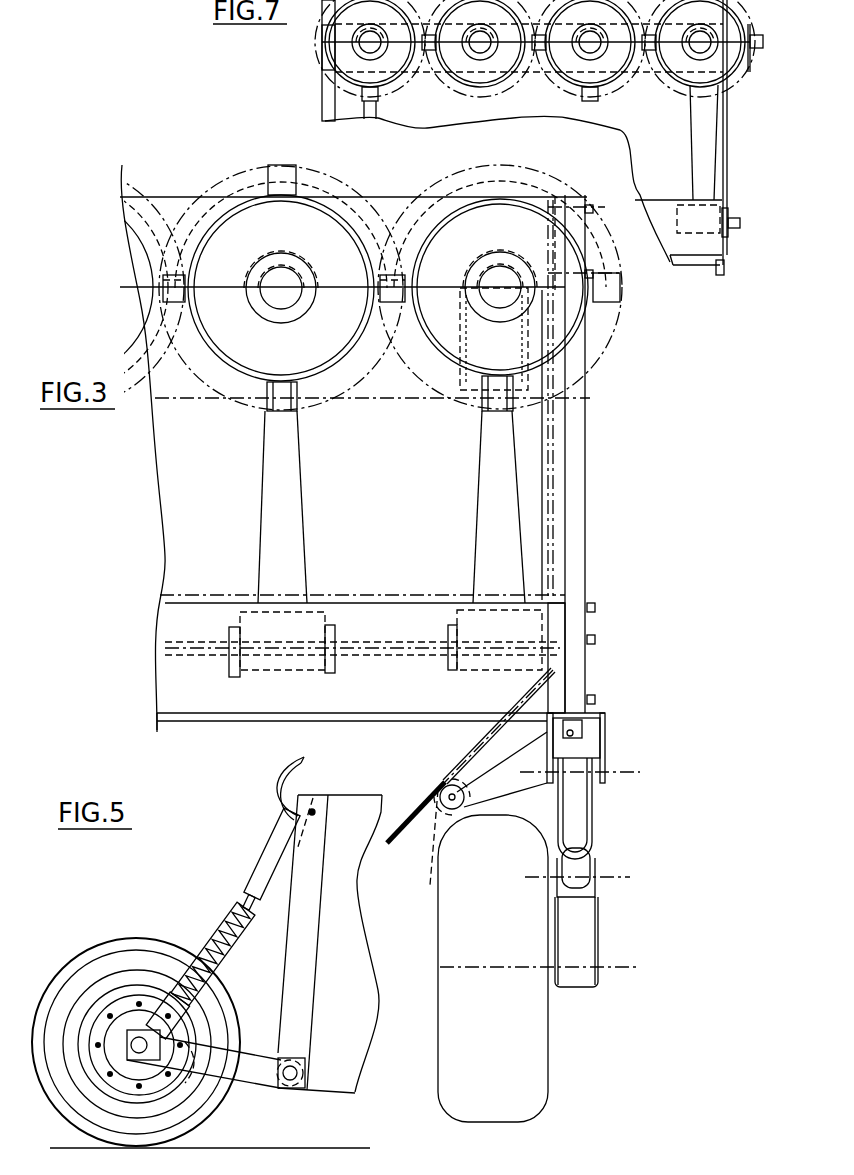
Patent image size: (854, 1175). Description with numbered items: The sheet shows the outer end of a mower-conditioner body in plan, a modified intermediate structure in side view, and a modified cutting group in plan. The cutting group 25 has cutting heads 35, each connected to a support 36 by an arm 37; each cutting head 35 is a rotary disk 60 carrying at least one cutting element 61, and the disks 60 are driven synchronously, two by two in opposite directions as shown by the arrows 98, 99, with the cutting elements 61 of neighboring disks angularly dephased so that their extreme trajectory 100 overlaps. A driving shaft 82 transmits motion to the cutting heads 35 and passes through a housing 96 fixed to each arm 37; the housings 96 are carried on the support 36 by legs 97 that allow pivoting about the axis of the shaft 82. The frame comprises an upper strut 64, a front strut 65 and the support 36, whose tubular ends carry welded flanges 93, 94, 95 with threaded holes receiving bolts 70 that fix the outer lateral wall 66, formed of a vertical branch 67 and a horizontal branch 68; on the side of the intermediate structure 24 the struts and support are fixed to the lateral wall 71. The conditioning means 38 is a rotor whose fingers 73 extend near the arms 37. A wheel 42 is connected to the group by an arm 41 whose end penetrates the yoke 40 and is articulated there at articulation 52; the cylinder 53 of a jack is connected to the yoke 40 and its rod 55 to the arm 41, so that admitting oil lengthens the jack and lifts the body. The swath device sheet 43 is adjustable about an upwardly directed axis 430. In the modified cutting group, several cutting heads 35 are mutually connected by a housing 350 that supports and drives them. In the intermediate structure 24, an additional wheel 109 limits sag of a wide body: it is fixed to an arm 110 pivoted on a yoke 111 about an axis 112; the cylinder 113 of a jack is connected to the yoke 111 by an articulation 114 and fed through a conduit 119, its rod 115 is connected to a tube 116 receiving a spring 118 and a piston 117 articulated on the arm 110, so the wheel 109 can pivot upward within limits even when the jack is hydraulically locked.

In FIG. 5, the intermediate structure 24 is at (357, 1014).
In FIG. 3, the cutting group 25 is at (222, 182).
In FIG. 7, the cutting head 35 is at (384, 100).
In FIG. 3, the cutting head 35 is at (326, 196).
In FIG. 7, the support 36 is at (708, 266).
In FIG. 3, the support 36 is at (232, 722).
In FIG. 7, the arm 37 is at (372, 110).
In FIG. 3, the arm 37 is at (270, 510).
In FIG. 3, the conditioning means 38 is at (556, 475).
In FIG. 3, the yoke 40 is at (606, 752).
In FIG. 3, the arm 41 is at (585, 950).
In FIG. 3, the wheel 42 is at (543, 1060).
In FIG. 3, the swath device sheet 43 is at (417, 815).
In FIG. 3, the articulation 52 is at (610, 878).
In FIG. 3, the cylinder 53 is at (580, 805).
In FIG. 3, the rod 55 is at (576, 870).
In FIG. 3, the rotary disk 60 is at (250, 355).
In FIG. 3, the cutting element 61 is at (281, 172).
In FIG. 7, the upper strut 64 is at (685, 250).
In FIG. 3, the upper strut 64 is at (170, 618).
In FIG. 3, the front strut 65 is at (177, 290).
In FIG. 7, the lateral wall 66 is at (322, 88).
In FIG. 3, the lateral wall 66 is at (588, 521).
In FIG. 3, the vertical branch 67 is at (582, 678).
In FIG. 3, the horizontal branch 68 is at (585, 412).
In FIG. 3, the bolts 70 is at (594, 212).
In FIG. 7, the lateral wall 71 is at (727, 160).
In FIG. 3, the fingers 73 is at (466, 345).
In FIG. 7, the driving shaft 82 is at (738, 226).
In FIG. 3, the driving shaft 82 is at (387, 648).
In FIG. 3, the flange 93 is at (561, 200).
In FIG. 3, the flange 94 is at (568, 606).
In FIG. 3, the flange 95 is at (566, 734).
In FIG. 7, the housing 96 is at (692, 218).
In FIG. 3, the housing 96 is at (308, 630).
In FIG. 3, the legs 97 is at (236, 630).
In FIG. 3, the arrow 98 is at (347, 266).
In FIG. 3, the arrow 99 is at (434, 276).
In FIG. 3, the extreme trajectory 100 is at (378, 197).
In FIG. 5, the additional wheel 109 is at (66, 972).
In FIG. 5, the arm 110 is at (260, 1070).
In FIG. 5, the yoke 111 is at (297, 998).
In FIG. 5, the axis 112 is at (296, 1084).
In FIG. 5, the cylinder 113 is at (264, 872).
In FIG. 5, the articulation 114 is at (315, 814).
In FIG. 5, the rod 115 is at (246, 899).
In FIG. 5, the tube 116 is at (222, 936).
In FIG. 5, the piston 117 is at (126, 990).
In FIG. 5, the spring 118 is at (212, 962).
In FIG. 5, the conduit 119 is at (280, 790).
In FIG. 7, the housing 350 is at (530, 62).
In FIG. 3, the axis 430 is at (457, 800).